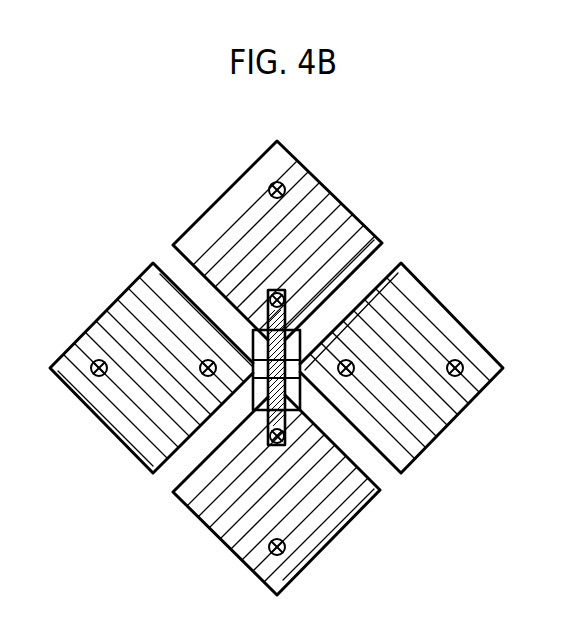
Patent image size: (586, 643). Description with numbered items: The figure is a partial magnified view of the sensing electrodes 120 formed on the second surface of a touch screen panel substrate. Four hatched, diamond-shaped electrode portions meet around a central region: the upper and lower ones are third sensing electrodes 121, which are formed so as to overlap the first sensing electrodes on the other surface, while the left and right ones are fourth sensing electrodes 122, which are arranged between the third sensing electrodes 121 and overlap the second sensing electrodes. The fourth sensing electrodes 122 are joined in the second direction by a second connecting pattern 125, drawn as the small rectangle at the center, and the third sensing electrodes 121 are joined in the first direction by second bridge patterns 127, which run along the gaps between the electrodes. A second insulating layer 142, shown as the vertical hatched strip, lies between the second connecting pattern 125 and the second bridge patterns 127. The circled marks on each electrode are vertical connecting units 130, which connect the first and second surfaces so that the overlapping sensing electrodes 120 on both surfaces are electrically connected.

The sensing electrodes 120 is at (367, 150).
The third sensing electrodes 121 is at (350, 227).
The fourth sensing electrodes 122 is at (410, 300).
The second connecting patterns 125 is at (302, 410).
The second bridge patterns 127 is at (253, 342).
The vertical connecting units 130 is at (99, 377).
The second insulating layer 142 is at (262, 400).